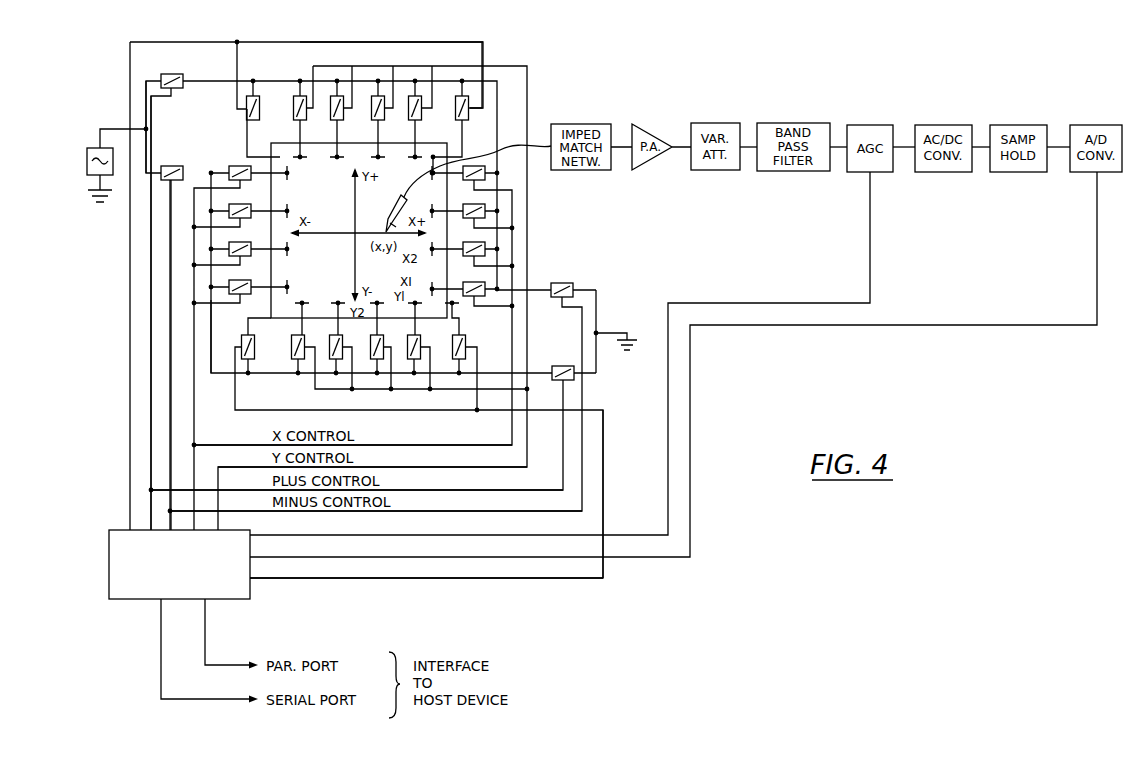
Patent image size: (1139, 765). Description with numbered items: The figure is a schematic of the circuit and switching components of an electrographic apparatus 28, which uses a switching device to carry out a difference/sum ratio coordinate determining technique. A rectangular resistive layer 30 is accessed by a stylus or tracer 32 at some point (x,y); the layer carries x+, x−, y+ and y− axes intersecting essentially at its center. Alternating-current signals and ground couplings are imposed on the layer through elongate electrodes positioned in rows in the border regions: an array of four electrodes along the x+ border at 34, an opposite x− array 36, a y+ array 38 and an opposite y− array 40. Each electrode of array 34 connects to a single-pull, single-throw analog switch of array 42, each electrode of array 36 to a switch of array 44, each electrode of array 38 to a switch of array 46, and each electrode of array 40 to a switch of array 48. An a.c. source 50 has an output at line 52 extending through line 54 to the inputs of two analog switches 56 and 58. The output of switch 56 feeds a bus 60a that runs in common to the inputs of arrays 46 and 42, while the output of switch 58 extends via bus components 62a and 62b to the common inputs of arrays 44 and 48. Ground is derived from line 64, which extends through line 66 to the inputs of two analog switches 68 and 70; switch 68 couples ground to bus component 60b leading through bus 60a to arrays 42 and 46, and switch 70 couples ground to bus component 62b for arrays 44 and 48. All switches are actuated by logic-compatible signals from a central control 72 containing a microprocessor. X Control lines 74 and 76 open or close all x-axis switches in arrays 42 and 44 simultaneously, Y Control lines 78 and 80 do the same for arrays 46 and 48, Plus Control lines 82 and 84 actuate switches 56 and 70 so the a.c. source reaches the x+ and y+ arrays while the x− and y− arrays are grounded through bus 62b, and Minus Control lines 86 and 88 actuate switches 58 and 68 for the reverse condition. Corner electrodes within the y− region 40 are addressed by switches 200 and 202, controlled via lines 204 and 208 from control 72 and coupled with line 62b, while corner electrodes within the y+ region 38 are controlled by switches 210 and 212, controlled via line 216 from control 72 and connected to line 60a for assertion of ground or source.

The electrographic apparatus 28 is at (534, 73).
The resistive layer 30 is at (387, 133).
The stylus or tracer 32 is at (398, 207).
The x+ electrode array 34 is at (444, 305).
The x− electrode array 36 is at (275, 153).
The y+ electrode array 38 is at (442, 131).
The y− electrode array 40 is at (284, 312).
The x+ analog switch array 42 is at (477, 154).
The x− analog switch array 44 is at (243, 306).
The y+ analog switch array 46 is at (288, 108).
The y− analog switch array 48 is at (290, 362).
The a.c. source 50 is at (87, 159).
The output line 52 is at (103, 128).
The line 54 is at (143, 97).
The analog switch 56 is at (178, 74).
The analog switch 58 is at (170, 166).
The bus 60a is at (284, 80).
The bus component 60b is at (543, 288).
The bus component 62a is at (205, 172).
The bus component 62b is at (215, 380).
The ground line 64 is at (627, 322).
The line 66 is at (597, 290).
The analog switch 68 is at (570, 283).
The analog switch 70 is at (566, 366).
The control 72 is at (250, 593).
The X Control line 74 is at (197, 429).
The X Control line 76 is at (470, 447).
The Y Control line 78 is at (436, 468).
The Y Control line 80 is at (472, 391).
The Plus Control line 82 is at (151, 445).
The Plus Control line 84 is at (454, 490).
The Minus Control line 86 is at (168, 410).
The Minus Control line 88 is at (486, 512).
The corner electrode switch 200 is at (256, 372).
The corner electrode switch 202 is at (466, 343).
The control line 204 is at (474, 413).
The control line 208 is at (603, 457).
The corner electrode switch 210 is at (246, 108).
The corner electrode switch 212 is at (470, 118).
The control line 216 is at (390, 42).